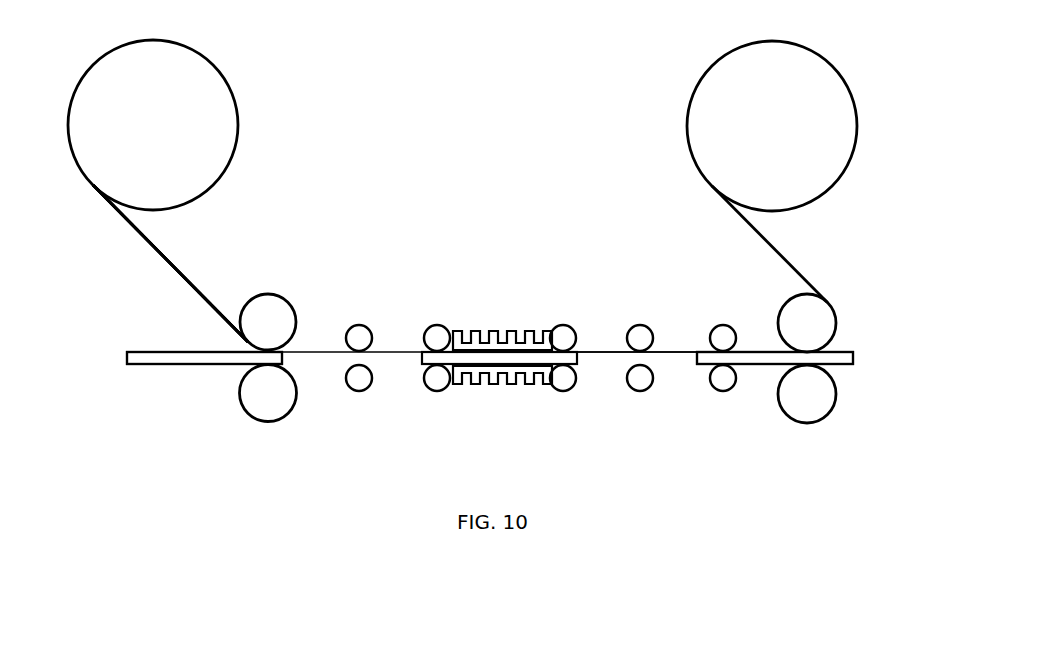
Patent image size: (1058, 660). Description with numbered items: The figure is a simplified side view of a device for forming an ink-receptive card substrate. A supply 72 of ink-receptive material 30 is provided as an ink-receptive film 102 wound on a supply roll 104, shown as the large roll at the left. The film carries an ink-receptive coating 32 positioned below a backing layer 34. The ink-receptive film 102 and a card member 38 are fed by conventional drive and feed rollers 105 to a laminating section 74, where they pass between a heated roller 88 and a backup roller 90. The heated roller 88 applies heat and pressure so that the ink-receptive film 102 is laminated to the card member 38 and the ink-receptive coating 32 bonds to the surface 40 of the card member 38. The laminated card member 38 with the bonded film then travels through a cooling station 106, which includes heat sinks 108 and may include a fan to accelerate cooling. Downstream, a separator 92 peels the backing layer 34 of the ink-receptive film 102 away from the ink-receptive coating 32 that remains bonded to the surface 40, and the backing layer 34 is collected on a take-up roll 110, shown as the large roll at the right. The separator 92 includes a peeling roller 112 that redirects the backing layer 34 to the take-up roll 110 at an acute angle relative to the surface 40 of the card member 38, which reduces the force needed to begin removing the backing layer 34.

The ink-receptive material 30 is at (150, 240).
The ink-receptive coating 32 is at (158, 264).
The backing layer 34 is at (190, 262).
The card member 38 is at (140, 364).
The surface of card member 40 is at (138, 352).
The supply of ink-receptive material 72 is at (188, 112).
The laminating section 74 is at (319, 338).
The heated roller 88 is at (270, 298).
The backup roller 90 is at (270, 412).
The separator 92 is at (791, 336).
The ink-receptive film 102 is at (132, 225).
The supply roll 104 is at (228, 98).
The drive and feed rollers 105 is at (363, 330).
The cooling station 106 is at (528, 317).
The heat sinks 108 is at (510, 332).
The take-up roll 110 is at (808, 62).
The peeling roller 112 is at (795, 308).